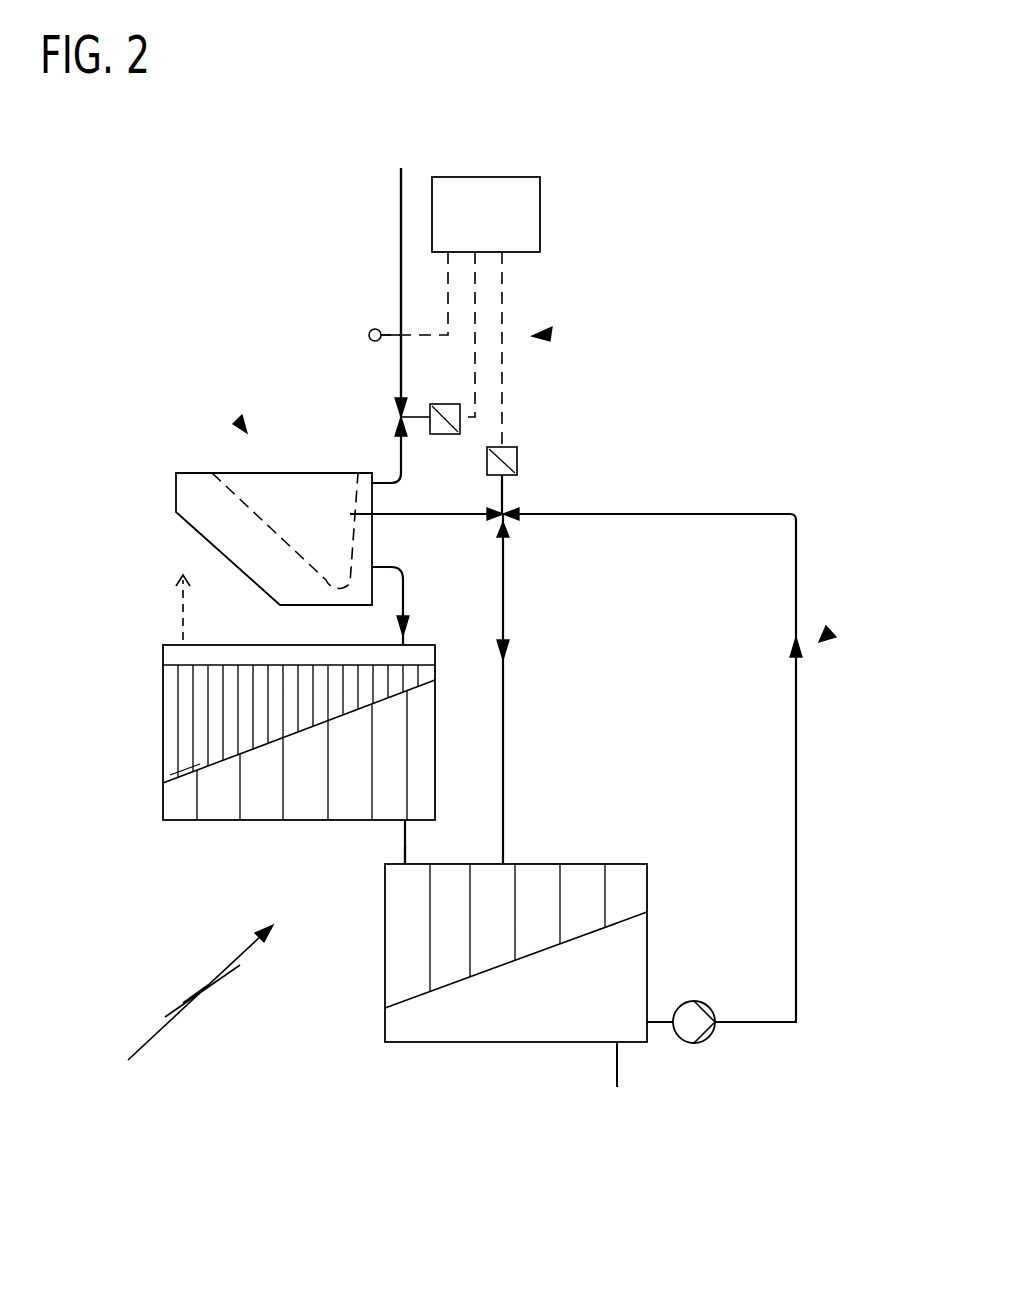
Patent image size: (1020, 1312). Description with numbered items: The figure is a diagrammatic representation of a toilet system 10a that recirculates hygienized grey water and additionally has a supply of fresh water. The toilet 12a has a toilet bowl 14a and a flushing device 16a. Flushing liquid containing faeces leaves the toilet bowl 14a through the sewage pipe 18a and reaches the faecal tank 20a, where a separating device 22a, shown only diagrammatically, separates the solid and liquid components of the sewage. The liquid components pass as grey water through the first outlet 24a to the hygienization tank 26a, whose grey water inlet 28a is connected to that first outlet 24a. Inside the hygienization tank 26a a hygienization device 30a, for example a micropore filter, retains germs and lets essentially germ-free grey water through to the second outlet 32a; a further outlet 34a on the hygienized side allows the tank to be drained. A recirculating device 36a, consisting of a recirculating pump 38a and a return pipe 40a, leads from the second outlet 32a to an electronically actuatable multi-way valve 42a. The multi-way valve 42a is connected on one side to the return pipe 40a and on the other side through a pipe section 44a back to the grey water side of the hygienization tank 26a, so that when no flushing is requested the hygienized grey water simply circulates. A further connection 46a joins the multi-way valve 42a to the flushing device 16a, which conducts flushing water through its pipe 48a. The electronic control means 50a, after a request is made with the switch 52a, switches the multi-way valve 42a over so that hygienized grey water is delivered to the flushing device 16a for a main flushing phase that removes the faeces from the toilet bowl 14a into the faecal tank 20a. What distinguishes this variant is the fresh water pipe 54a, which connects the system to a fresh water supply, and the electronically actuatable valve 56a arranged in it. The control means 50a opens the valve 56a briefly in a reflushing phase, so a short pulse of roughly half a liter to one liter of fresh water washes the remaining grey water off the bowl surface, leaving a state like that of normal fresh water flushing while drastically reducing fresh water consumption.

The toilet system 10a is at (195, 1009).
The toilet 12a is at (240, 422).
The toilet bowl 14a is at (210, 473).
The flushing device 16a is at (548, 333).
The sewage pipe 18a is at (408, 622).
The faecal tank 20a is at (163, 735).
The separating device 22a is at (187, 772).
The first outlet 24a is at (405, 825).
The hygienization tank 26a is at (385, 960).
The grey water inlet 28a is at (405, 862).
The hygienization device 30a is at (597, 930).
The second outlet 32a is at (650, 1024).
The further outlet 34a is at (614, 1045).
The recirculating device 36a is at (830, 634).
The recirculating pump 38a is at (708, 1040).
The return pipe 40a is at (797, 797).
The multi-way valve 42a is at (520, 512).
The pipe section 44a is at (503, 716).
The further connection 46a is at (485, 512).
The pipe 48a is at (422, 514).
The electronic control means 50a is at (540, 204).
The switch 52a is at (369, 333).
The fresh water pipe 54a is at (401, 268).
The valve 56a is at (395, 417).